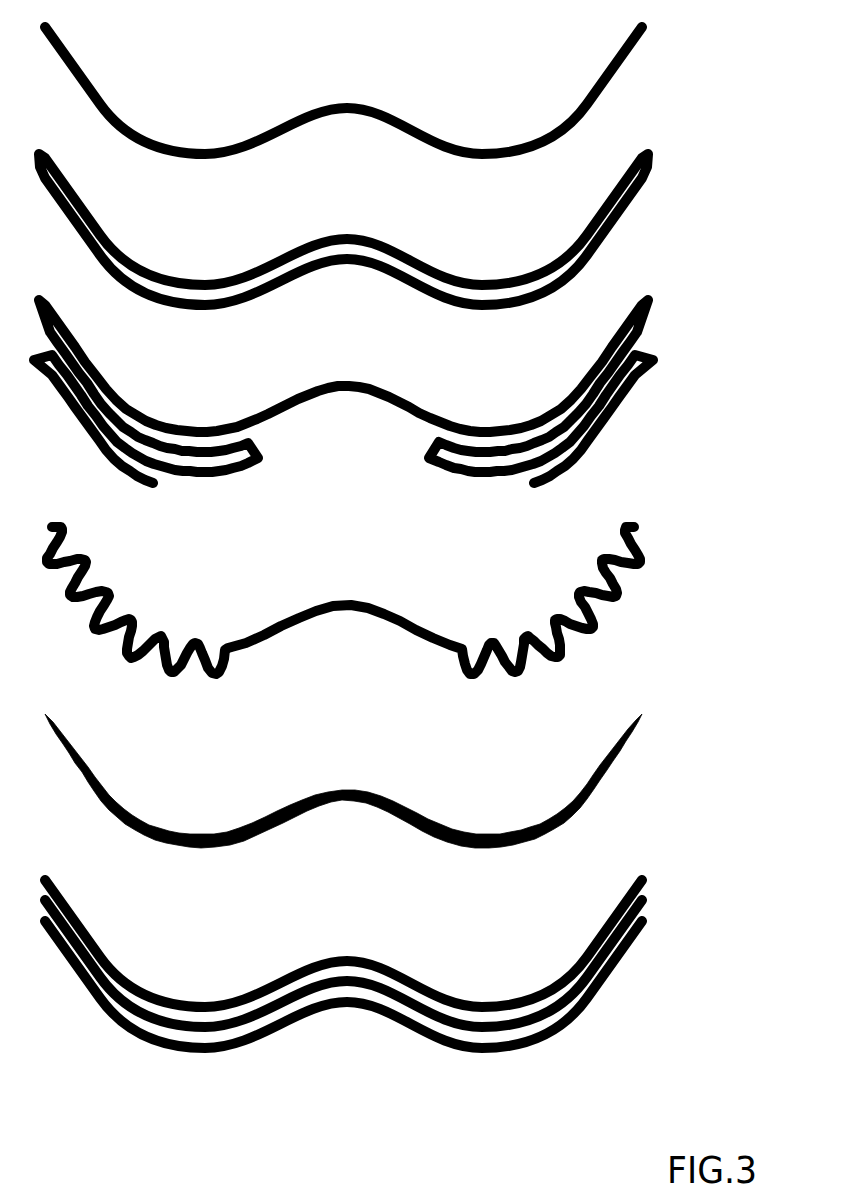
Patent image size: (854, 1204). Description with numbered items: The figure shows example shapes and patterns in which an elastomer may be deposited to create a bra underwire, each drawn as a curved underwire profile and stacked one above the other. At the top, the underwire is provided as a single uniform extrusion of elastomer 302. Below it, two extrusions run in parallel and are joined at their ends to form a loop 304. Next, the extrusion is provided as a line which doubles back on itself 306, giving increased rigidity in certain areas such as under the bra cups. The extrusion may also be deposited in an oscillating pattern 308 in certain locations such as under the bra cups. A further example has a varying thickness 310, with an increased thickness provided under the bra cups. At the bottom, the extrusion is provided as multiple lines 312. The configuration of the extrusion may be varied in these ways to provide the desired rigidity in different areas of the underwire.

The single uniform extrusion of elastomer 302 is at (637, 47).
The loop 304 is at (640, 210).
The line which doubles back on itself 306 is at (635, 403).
The oscillating pattern 308 is at (652, 602).
The varying thickness 310 is at (622, 775).
The multiple lines 312 is at (624, 965).